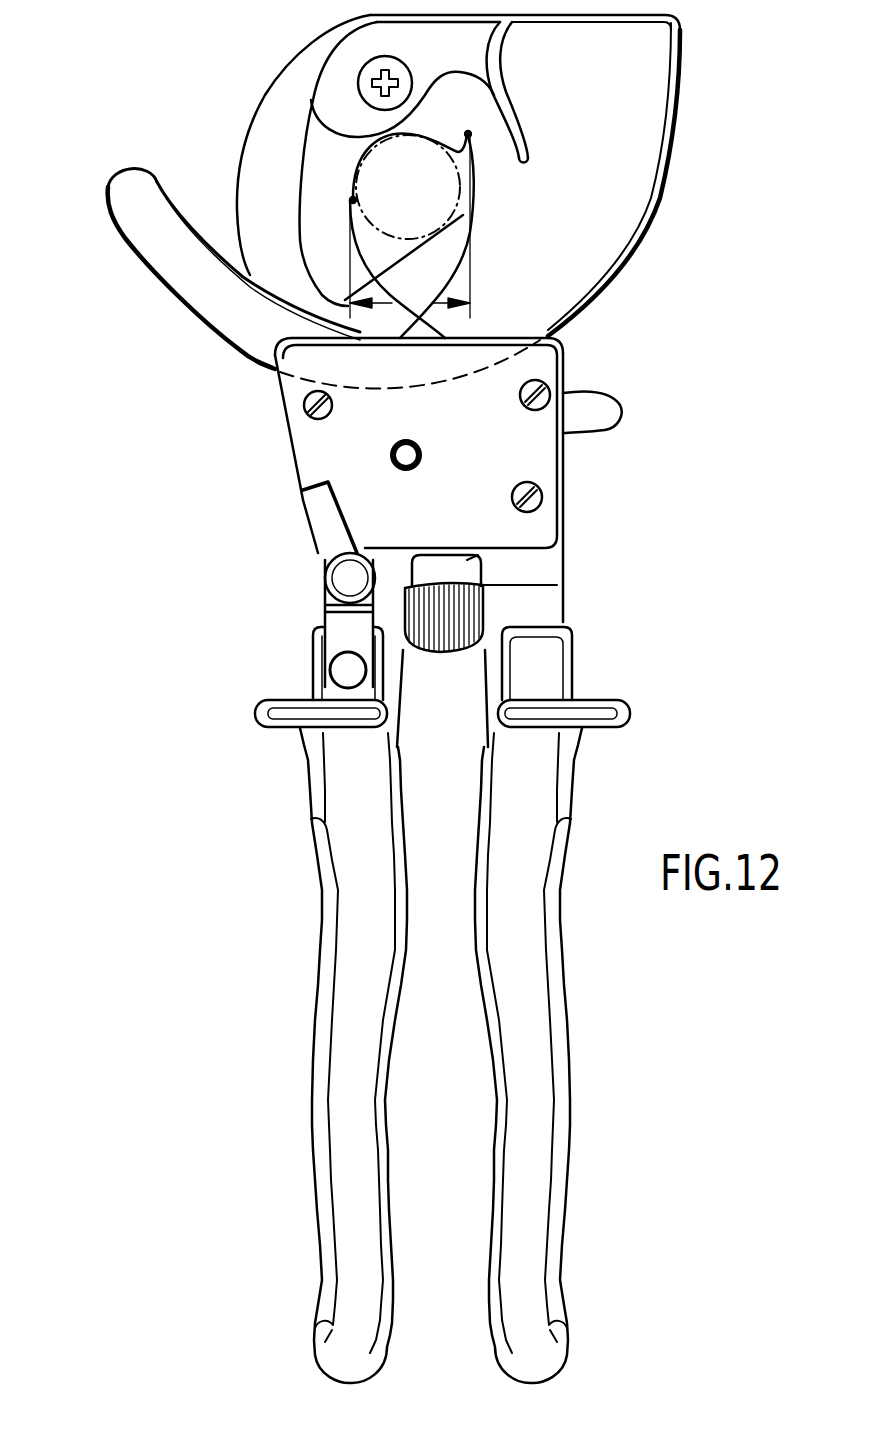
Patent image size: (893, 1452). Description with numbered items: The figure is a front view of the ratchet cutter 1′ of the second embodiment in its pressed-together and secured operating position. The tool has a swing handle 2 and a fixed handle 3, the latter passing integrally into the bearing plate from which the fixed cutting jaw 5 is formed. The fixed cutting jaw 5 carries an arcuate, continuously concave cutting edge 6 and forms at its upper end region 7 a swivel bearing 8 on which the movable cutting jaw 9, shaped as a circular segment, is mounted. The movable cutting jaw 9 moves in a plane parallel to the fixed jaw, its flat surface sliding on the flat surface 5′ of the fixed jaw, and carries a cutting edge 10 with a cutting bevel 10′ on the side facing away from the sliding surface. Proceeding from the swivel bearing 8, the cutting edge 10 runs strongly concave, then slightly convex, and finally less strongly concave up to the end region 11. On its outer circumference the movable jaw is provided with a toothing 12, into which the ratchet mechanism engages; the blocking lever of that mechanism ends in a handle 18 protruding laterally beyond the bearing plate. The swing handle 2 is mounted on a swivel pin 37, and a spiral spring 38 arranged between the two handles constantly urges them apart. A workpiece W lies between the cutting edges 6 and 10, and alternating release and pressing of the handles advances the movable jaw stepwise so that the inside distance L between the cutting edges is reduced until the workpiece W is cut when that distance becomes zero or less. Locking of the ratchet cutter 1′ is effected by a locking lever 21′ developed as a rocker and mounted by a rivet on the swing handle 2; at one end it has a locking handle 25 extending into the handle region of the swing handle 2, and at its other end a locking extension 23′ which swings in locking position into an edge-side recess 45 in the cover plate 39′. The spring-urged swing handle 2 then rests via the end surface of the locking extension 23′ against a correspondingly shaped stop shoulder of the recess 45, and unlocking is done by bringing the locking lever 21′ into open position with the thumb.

The ratchet cutter 1′ is at (617, 582).
The swing handle 2 is at (350, 1044).
The fixed handle 3 is at (532, 1040).
The fixed cutting jaw 5 is at (277, 215).
The flat surface 5′ is at (273, 135).
The cutting edge 6 is at (350, 194).
The upper end region 7 is at (268, 86).
The swivel bearing 8 is at (370, 70).
The movable cutting jaw 9 is at (633, 102).
The cutting edge 10 is at (472, 141).
The cutting bevel 10′ is at (480, 162).
The end region 11 is at (137, 192).
The toothing 12 is at (627, 257).
The handle 18 is at (590, 417).
The locking lever 21′ is at (305, 547).
The locking extension 23′ is at (330, 505).
The locking handle 25 is at (343, 628).
The swivel pin 37 is at (395, 455).
The spiral spring 38 is at (450, 614).
The cover plate 39′ is at (303, 431).
The recess 45 is at (330, 505).
The workpiece W is at (423, 180).
The inside distance L is at (410, 229).